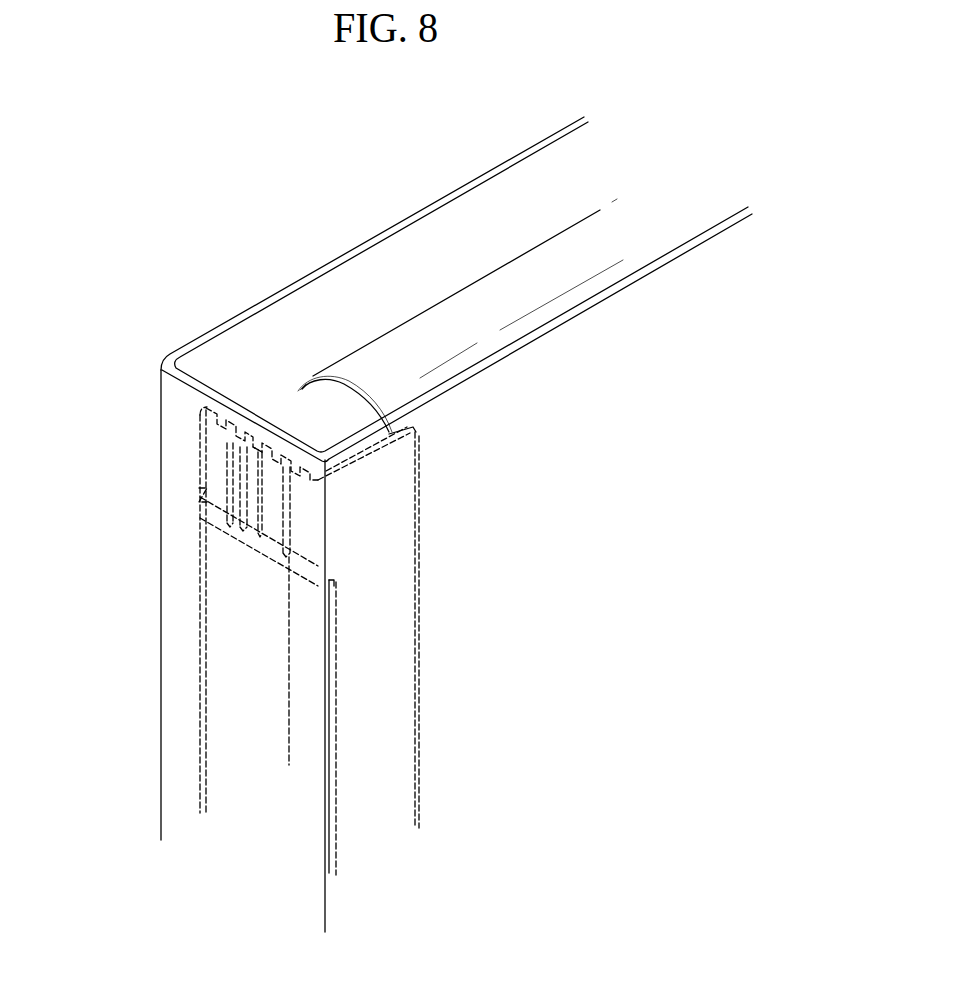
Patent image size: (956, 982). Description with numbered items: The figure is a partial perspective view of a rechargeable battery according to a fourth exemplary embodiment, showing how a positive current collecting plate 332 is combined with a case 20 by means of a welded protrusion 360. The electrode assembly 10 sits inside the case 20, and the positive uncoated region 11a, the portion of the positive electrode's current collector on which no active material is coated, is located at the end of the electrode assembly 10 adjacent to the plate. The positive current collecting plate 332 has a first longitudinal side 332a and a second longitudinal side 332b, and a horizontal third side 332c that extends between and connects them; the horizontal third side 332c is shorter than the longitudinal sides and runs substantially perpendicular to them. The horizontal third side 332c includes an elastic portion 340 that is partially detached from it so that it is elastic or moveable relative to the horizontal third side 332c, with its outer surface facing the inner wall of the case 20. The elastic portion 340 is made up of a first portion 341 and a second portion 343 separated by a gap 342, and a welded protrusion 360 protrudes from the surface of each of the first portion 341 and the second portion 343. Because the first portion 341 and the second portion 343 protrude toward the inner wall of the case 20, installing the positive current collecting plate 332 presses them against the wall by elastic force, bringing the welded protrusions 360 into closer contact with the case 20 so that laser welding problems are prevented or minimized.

The electrode assembly 10 is at (470, 310).
The positive uncoated region 11a is at (283, 417).
The case 20 is at (160, 633).
The positive current collecting plate 332 is at (303, 537).
The first longitudinal side 332a is at (377, 733).
The second longitudinal side 332b is at (231, 692).
The horizontal third side 332c is at (317, 570).
The elastic portion 340 is at (179, 514).
The first portion 341 is at (203, 447).
The gap 342 is at (257, 436).
The second portion 343 is at (305, 515).
The welded protrusion 360 is at (273, 542).